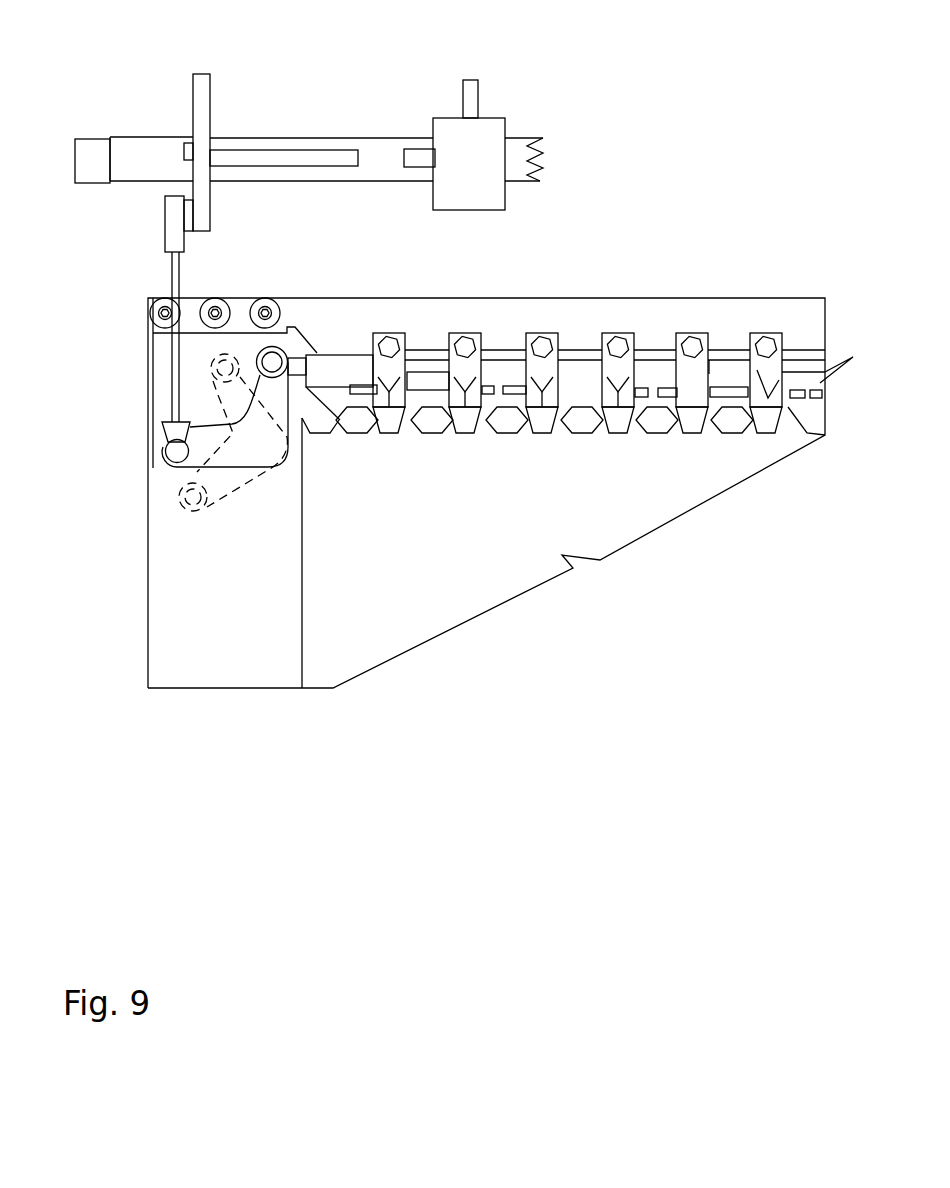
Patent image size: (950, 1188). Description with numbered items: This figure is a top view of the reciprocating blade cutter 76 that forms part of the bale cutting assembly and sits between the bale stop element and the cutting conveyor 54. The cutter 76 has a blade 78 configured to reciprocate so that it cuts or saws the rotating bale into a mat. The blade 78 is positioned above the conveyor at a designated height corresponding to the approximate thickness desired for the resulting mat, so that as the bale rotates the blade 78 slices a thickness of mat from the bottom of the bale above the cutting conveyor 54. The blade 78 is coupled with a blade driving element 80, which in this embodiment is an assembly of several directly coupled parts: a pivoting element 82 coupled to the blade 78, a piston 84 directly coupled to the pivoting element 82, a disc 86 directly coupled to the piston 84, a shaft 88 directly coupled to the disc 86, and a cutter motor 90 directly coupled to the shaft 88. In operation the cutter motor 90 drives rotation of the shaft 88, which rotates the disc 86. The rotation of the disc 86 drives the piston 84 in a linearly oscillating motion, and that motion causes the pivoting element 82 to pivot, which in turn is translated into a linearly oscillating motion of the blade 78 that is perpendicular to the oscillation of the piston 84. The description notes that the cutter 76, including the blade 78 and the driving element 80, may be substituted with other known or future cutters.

The cutting conveyor 54 is at (440, 590).
The reciprocating blade cutter 76 is at (583, 322).
The blade 78 is at (737, 423).
The blade driving element 80 is at (118, 274).
The pivoting element 82 is at (172, 467).
The piston 84 is at (153, 366).
The disc 86 is at (190, 107).
The shaft 88 is at (303, 150).
The cutter motor 90 is at (447, 118).